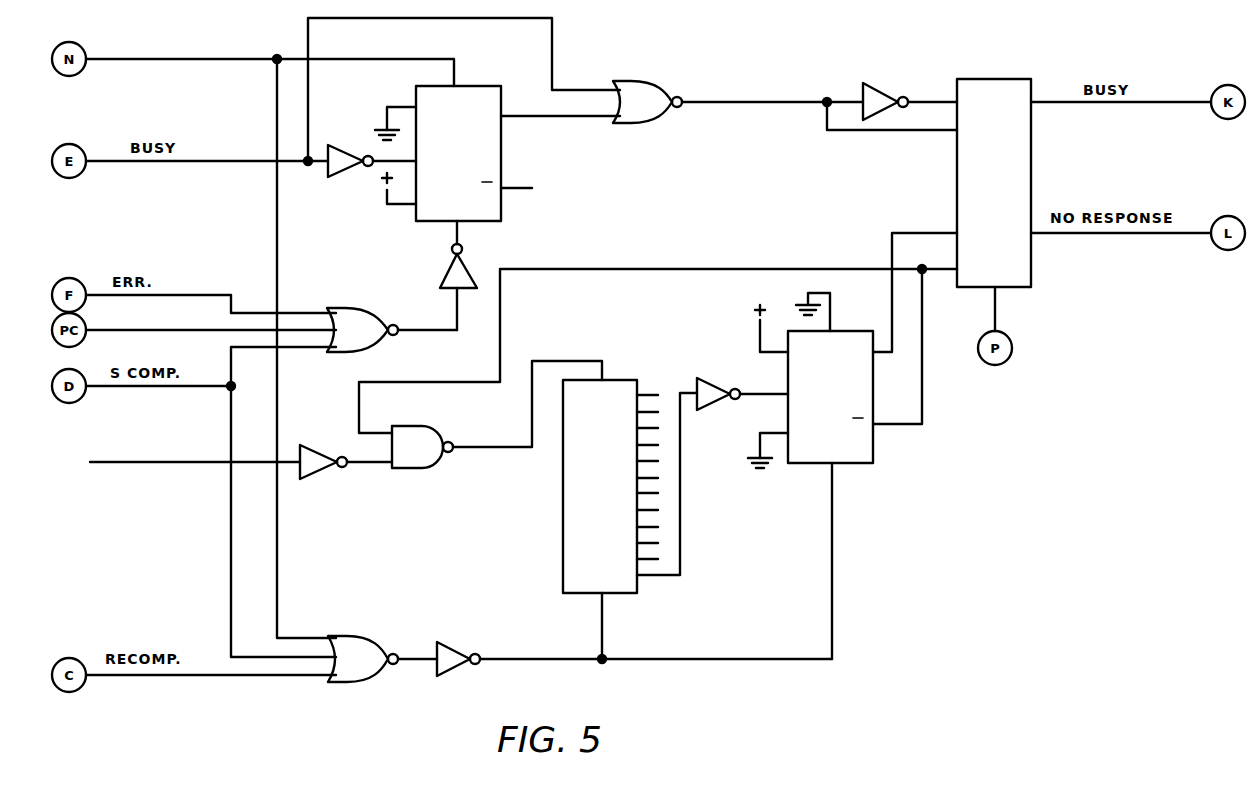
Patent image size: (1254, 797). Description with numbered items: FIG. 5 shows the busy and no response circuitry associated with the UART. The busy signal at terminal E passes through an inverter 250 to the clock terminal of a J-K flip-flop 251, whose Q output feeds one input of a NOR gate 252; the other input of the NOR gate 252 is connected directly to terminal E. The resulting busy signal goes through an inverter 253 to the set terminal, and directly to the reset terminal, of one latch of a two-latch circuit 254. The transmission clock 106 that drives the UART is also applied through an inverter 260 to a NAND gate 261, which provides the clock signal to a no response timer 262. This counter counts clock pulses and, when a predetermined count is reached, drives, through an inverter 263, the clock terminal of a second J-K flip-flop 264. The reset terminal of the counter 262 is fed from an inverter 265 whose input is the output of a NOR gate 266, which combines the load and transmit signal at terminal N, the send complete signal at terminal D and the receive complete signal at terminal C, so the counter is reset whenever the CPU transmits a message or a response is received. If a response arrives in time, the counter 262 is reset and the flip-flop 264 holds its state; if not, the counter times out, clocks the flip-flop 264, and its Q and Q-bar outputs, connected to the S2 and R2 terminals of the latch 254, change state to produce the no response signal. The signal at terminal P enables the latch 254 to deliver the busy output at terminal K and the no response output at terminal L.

The transmission clock 106 is at (195, 452).
The inverter 250 is at (345, 176).
The J-K flip-flop 251 is at (501, 150).
The NOR gate 252 is at (645, 80).
The inverter 253 is at (882, 88).
The two-latch circuit 254 is at (1031, 157).
The inverter 260 is at (312, 477).
The NAND gate 261 is at (420, 426).
The no response timer 262 is at (563, 512).
The inverter 263 is at (715, 380).
The J-K flip-flop 264 is at (862, 465).
The inverter 265 is at (455, 637).
The NOR gate 266 is at (370, 635).